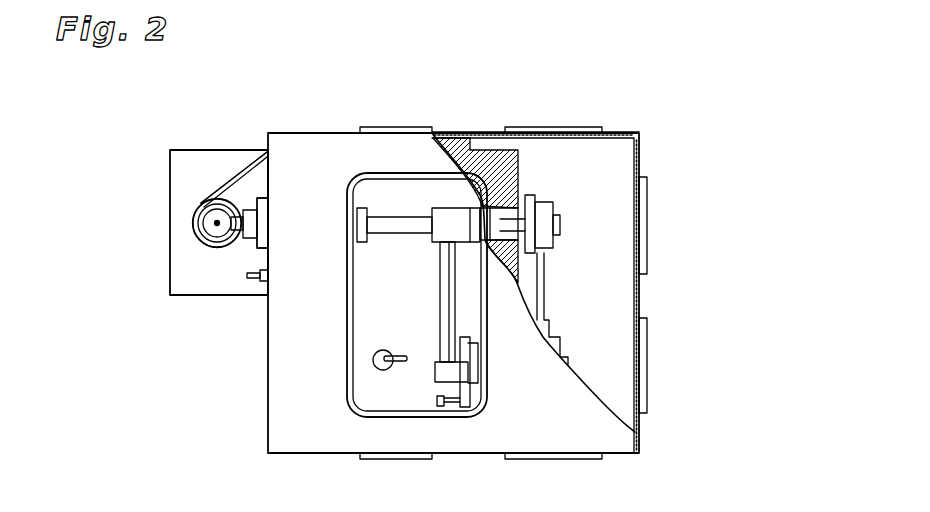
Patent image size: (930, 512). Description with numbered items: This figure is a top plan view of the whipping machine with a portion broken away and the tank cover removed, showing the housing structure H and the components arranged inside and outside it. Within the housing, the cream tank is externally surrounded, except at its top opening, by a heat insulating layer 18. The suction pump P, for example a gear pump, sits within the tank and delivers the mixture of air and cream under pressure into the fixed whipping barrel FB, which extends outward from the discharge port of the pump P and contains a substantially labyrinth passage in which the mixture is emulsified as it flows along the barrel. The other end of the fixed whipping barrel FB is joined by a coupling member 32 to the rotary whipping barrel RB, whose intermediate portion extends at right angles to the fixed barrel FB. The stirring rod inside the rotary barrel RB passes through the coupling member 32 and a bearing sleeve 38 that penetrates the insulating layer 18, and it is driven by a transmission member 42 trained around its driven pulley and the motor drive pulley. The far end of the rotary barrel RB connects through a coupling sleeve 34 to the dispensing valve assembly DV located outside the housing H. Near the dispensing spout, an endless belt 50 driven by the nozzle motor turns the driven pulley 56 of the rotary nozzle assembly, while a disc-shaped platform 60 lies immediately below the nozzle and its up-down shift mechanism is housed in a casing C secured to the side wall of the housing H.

The housing structure H is at (264, 380).
The casing C is at (195, 173).
The dispensing valve assembly DV is at (214, 224).
The driven pulley 56 is at (196, 236).
The disc-shaped platform 60 is at (212, 247).
The endless belt 50 is at (248, 179).
The coupling sleeve 34 is at (261, 196).
The heat insulating layer 18 is at (502, 179).
The rotary whipping barrel RB is at (392, 227).
The coupling member 32 is at (454, 216).
The bearing sleeve 38 is at (519, 194).
The transmission member 42 is at (540, 277).
The fixed whipping barrel FB is at (448, 290).
The suction pump P is at (473, 365).